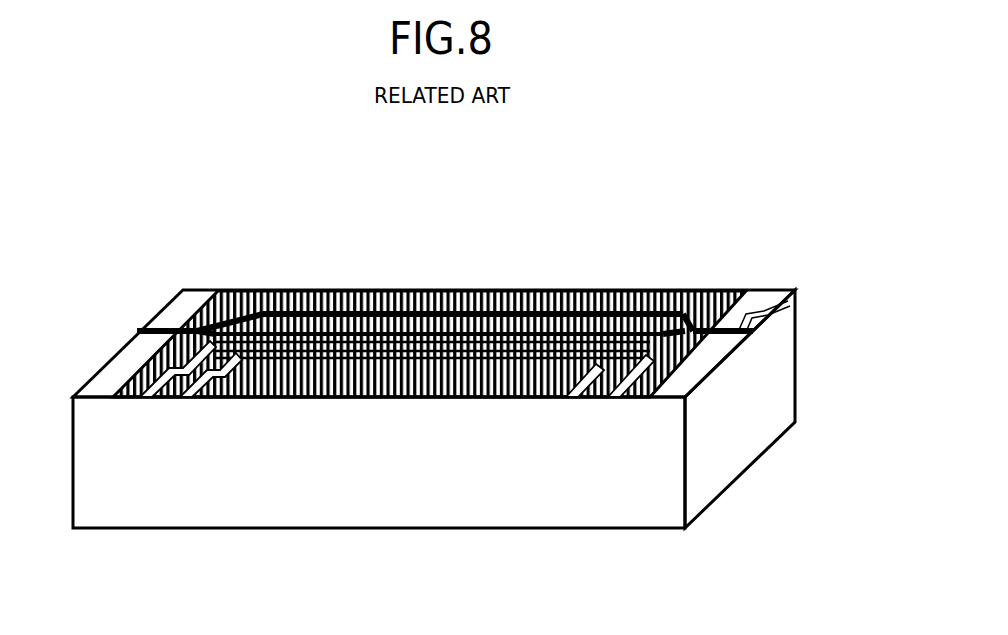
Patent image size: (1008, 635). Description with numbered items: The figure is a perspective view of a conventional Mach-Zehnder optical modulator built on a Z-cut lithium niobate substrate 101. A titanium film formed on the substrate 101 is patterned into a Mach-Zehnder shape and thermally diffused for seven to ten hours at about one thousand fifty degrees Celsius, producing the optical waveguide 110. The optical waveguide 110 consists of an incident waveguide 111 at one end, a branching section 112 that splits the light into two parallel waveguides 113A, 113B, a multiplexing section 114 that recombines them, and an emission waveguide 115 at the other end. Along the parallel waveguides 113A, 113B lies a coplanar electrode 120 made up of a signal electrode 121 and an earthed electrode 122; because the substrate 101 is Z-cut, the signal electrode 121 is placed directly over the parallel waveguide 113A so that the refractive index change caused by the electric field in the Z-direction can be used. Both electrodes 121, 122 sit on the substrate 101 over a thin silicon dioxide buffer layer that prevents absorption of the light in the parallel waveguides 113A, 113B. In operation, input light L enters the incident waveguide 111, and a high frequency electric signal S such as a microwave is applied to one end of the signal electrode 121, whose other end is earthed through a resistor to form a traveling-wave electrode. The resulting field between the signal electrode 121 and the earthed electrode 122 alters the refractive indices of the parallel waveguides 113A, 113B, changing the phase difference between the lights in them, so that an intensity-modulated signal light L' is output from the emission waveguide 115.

The substrate 101 is at (745, 475).
The optical waveguide 110 is at (463, 254).
The incident waveguide 111 is at (165, 331).
The branching section 112 is at (203, 331).
The parallel waveguide 113A is at (283, 342).
The parallel waveguide 113B is at (345, 312).
The multiplexing section 114 is at (692, 313).
The emission waveguide 115 is at (775, 303).
The coplanar electrode 120 is at (429, 263).
The signal electrode 121 is at (402, 380).
The earthed electrode 122 is at (420, 345).
The high frequency electric signal S is at (160, 412).
The light L is at (82, 332).
The signal light L' is at (809, 333).